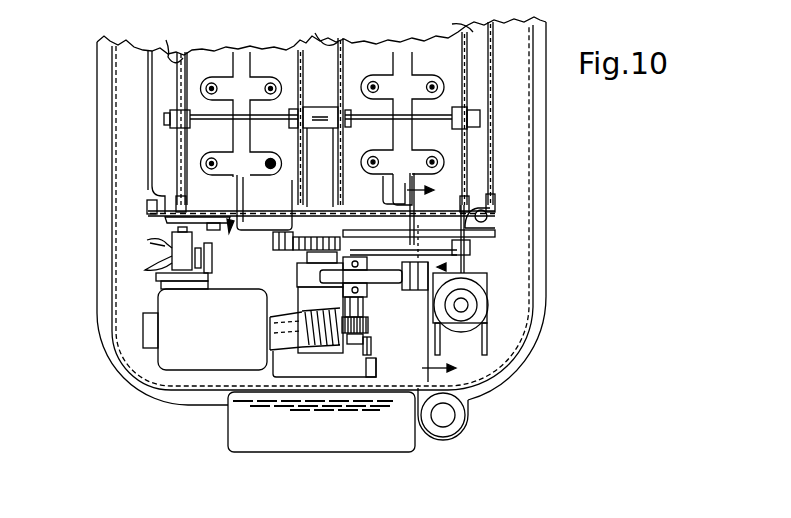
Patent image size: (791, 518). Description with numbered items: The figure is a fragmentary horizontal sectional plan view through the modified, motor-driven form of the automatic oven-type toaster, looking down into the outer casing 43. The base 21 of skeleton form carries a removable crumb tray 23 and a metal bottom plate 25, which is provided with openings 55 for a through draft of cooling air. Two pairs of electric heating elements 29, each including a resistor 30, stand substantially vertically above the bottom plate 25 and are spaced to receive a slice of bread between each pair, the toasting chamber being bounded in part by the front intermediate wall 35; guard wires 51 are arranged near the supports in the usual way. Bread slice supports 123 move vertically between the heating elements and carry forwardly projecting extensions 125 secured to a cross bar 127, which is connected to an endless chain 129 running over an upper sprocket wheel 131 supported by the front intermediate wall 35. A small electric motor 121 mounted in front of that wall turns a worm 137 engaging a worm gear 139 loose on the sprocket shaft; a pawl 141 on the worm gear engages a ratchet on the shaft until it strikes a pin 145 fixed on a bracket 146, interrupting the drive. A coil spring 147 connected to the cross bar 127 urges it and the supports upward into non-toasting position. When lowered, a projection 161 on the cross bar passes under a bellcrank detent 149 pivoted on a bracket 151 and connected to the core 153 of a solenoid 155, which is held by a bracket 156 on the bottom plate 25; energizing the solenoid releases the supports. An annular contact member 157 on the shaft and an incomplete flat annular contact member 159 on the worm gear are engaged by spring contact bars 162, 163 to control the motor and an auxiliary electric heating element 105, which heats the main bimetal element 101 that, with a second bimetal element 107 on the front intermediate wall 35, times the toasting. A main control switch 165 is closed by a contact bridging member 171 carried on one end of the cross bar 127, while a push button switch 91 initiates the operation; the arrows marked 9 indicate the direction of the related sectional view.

The section line arrow 9 is at (436, 274).
The base 21 is at (547, 153).
The crumb tray 23 is at (198, 52).
The bottom plate 25 is at (518, 118).
The electric heating elements 29 is at (313, 110).
The resistor 30 is at (297, 57).
The front intermediate wall 35 is at (152, 189).
The outer casing 43 is at (97, 107).
The guard wires 51 is at (270, 83).
The openings 55 is at (185, 181).
The push button switch 91 is at (450, 415).
The main bimetal element 101 is at (172, 240).
The auxiliary electric heating element 105 is at (150, 255).
The second bimetal element 107 is at (200, 222).
The electric motor 121 is at (205, 321).
The bread slice supports 123 is at (240, 110).
The forwardly projecting extensions 125 is at (246, 200).
The cross bar 127 is at (260, 227).
The endless chain 129 is at (300, 250).
The upper sprocket wheel 131 is at (313, 260).
The worm 137 is at (305, 313).
The worm gear 139 is at (367, 331).
The pawl 141 is at (371, 343).
The pin 145 is at (376, 357).
The bracket 146 is at (372, 370).
The coil spring 147 is at (290, 166).
The detent 149 is at (415, 248).
The bracket 151 is at (470, 237).
The core 153 is at (462, 305).
The solenoid 155 is at (487, 303).
The bracket 156 is at (488, 338).
The annular contact member 157 is at (327, 278).
The incomplete flat annular contact member 159 is at (372, 318).
The projection 161 is at (497, 222).
The spring contact bar 162 is at (323, 280).
The spring contact bar 163 is at (362, 307).
The main control switch 165 is at (444, 267).
The contact bridging member 171 is at (418, 291).